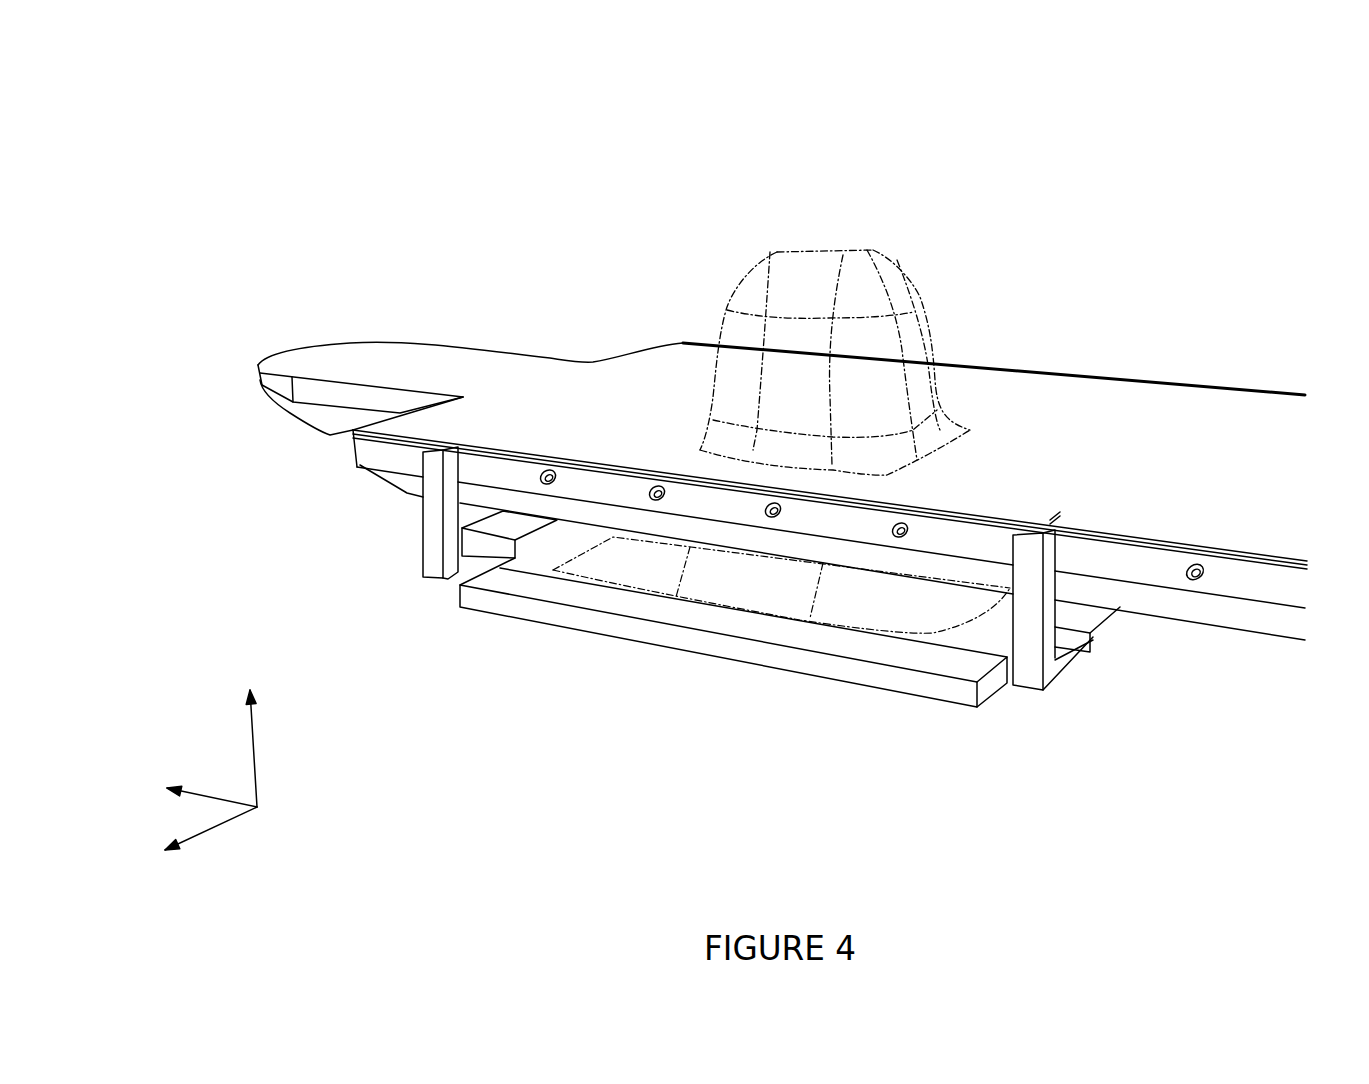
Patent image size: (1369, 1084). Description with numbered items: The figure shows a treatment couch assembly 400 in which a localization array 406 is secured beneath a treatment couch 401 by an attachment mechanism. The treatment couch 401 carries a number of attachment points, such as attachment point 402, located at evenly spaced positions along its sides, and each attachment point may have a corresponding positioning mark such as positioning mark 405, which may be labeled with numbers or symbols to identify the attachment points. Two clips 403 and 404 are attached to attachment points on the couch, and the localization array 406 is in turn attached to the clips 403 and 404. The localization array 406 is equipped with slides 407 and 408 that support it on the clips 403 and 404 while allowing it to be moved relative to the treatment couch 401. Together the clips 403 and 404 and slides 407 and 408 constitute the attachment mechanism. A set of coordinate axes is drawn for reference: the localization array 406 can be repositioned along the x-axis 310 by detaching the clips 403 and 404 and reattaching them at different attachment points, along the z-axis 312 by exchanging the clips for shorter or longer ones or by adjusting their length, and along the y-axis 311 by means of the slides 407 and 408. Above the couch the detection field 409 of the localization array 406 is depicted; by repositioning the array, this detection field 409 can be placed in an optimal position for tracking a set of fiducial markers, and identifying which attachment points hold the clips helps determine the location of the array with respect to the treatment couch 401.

The treatment couch assembly 400 is at (268, 178).
The treatment couch 401 is at (1183, 425).
The attachment point 402 is at (552, 468).
The clip 403 is at (432, 566).
The clip 404 is at (1031, 674).
The positioning mark 405 is at (1063, 508).
The localization array 406 is at (734, 648).
The slide 407 is at (496, 549).
The slide 408 is at (1093, 641).
The detection field 409 is at (880, 253).
The x-axis 310 is at (182, 777).
The y-axis 311 is at (176, 849).
The z-axis 312 is at (247, 718).